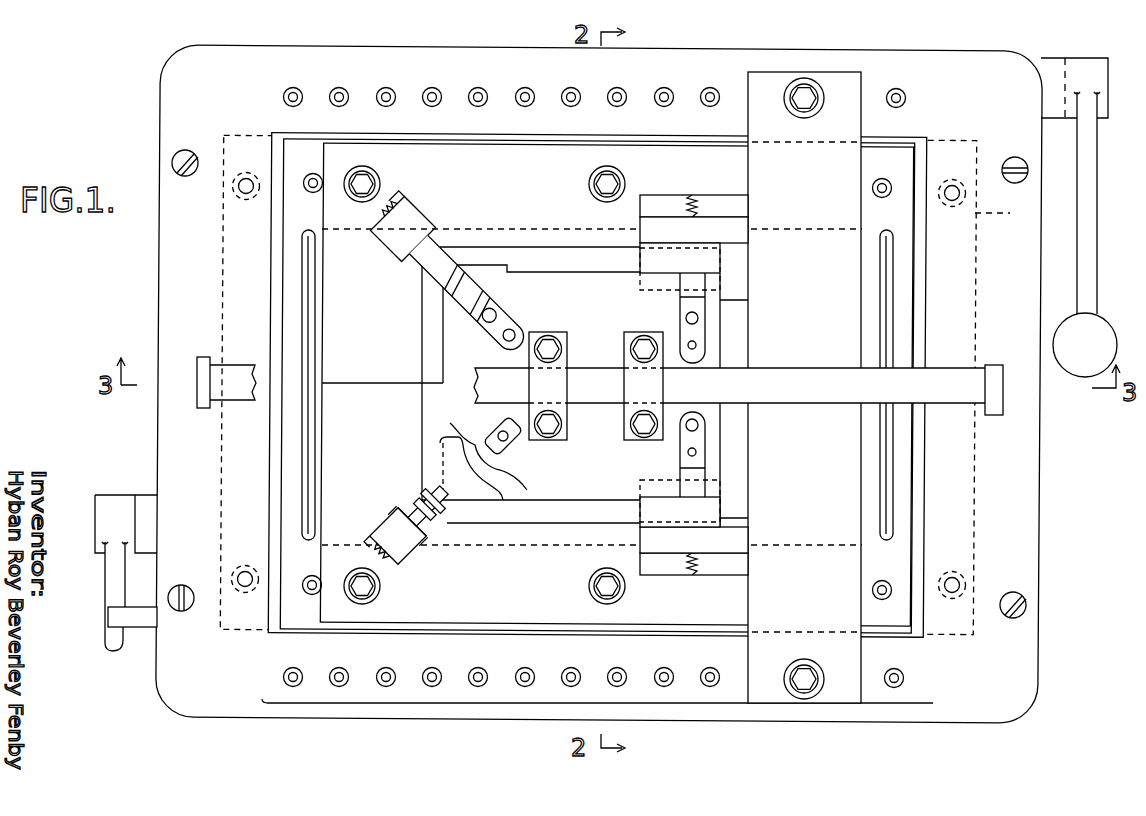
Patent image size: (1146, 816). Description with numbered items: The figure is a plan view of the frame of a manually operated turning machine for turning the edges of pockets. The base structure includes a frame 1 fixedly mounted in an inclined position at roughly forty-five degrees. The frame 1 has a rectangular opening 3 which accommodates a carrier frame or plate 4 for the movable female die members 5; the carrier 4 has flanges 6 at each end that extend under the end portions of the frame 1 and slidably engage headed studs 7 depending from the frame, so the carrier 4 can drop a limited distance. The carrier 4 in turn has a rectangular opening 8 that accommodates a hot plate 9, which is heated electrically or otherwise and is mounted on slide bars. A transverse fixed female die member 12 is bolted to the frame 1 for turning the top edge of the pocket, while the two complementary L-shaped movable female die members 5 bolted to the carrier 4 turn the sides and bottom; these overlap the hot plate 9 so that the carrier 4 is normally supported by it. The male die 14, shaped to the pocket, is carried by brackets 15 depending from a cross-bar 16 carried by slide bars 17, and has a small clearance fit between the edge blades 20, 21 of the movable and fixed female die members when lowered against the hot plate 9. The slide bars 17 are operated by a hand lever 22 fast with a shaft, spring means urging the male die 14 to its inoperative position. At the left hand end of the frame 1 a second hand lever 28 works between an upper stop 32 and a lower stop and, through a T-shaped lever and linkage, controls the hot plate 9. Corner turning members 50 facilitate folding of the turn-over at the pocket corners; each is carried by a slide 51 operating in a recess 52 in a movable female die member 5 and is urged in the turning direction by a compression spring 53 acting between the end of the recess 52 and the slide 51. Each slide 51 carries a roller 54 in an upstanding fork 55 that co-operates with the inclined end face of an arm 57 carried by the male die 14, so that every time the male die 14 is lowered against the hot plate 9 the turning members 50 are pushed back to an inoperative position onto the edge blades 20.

The frame 1 is at (197, 82).
The rectangular opening 3 is at (292, 135).
The carrier frame or plate 4 is at (300, 168).
The movable female die members 5 is at (455, 170).
The flanges 6 is at (268, 226).
The headed studs 7 is at (236, 186).
The rectangular opening 8 is at (300, 264).
The hot plate 9 is at (315, 292).
The fixed female die member 12 is at (838, 185).
The male die 14 is at (540, 300).
The brackets 15 is at (630, 360).
The cross-bar 16 is at (784, 388).
The slide bars 17 is at (205, 380).
The edge blades 20 is at (438, 370).
The edge blade 21 is at (733, 328).
The hand lever 22 is at (1088, 240).
The hand lever 28 is at (115, 588).
The upper stop 32 is at (143, 622).
The turning members 50 is at (660, 258).
The slides 51 is at (670, 226).
The recesses 52 is at (388, 538).
The compression spring 53 is at (410, 545).
The roller 54 is at (432, 515).
The upstanding fork 55 is at (443, 520).
The arm 57 is at (456, 306).